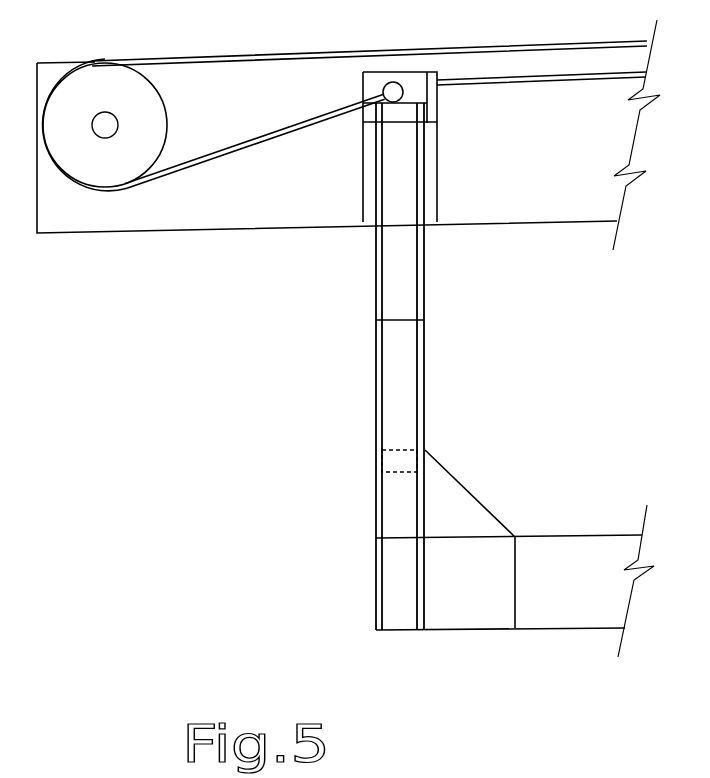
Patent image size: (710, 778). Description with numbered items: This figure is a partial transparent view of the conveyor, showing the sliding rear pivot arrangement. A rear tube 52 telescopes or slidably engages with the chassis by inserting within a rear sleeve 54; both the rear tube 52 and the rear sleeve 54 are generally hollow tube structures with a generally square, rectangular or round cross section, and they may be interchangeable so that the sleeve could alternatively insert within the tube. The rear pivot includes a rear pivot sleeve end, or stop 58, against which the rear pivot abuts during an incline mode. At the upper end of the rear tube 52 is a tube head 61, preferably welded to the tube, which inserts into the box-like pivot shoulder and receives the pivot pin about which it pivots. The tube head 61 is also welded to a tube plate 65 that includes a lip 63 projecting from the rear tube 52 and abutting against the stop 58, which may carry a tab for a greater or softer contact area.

The rear tube 52 is at (375, 258).
The rear sleeve 54 is at (376, 528).
The stop 58 is at (422, 322).
The tube head 61 is at (363, 79).
The lip 63 is at (437, 123).
The tube plate 65 is at (363, 140).